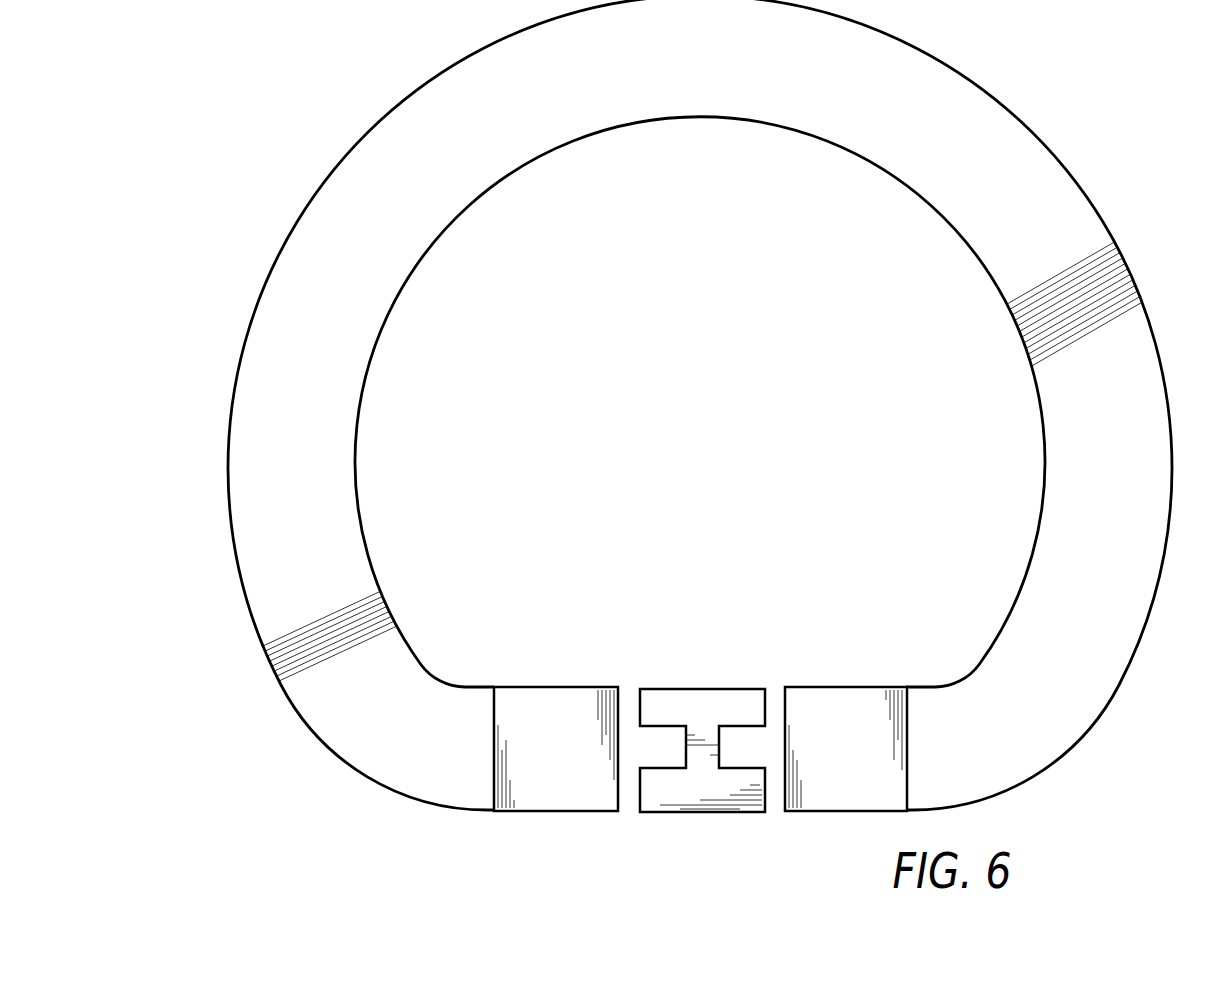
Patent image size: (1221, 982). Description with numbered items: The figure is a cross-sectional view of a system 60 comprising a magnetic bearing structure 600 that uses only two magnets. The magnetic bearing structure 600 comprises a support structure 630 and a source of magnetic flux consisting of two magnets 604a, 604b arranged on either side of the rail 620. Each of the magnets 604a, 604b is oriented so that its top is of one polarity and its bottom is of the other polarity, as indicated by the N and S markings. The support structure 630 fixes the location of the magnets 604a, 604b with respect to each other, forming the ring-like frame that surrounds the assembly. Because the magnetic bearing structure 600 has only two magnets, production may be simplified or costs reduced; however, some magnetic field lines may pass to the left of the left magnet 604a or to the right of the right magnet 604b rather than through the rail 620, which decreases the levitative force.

The system 60 is at (161, 152).
The magnetic bearing structure 600 is at (345, 157).
The support structure 630 is at (972, 118).
The left magnet 604a is at (577, 687).
The right magnet 604b is at (828, 687).
The rail 620 is at (703, 812).